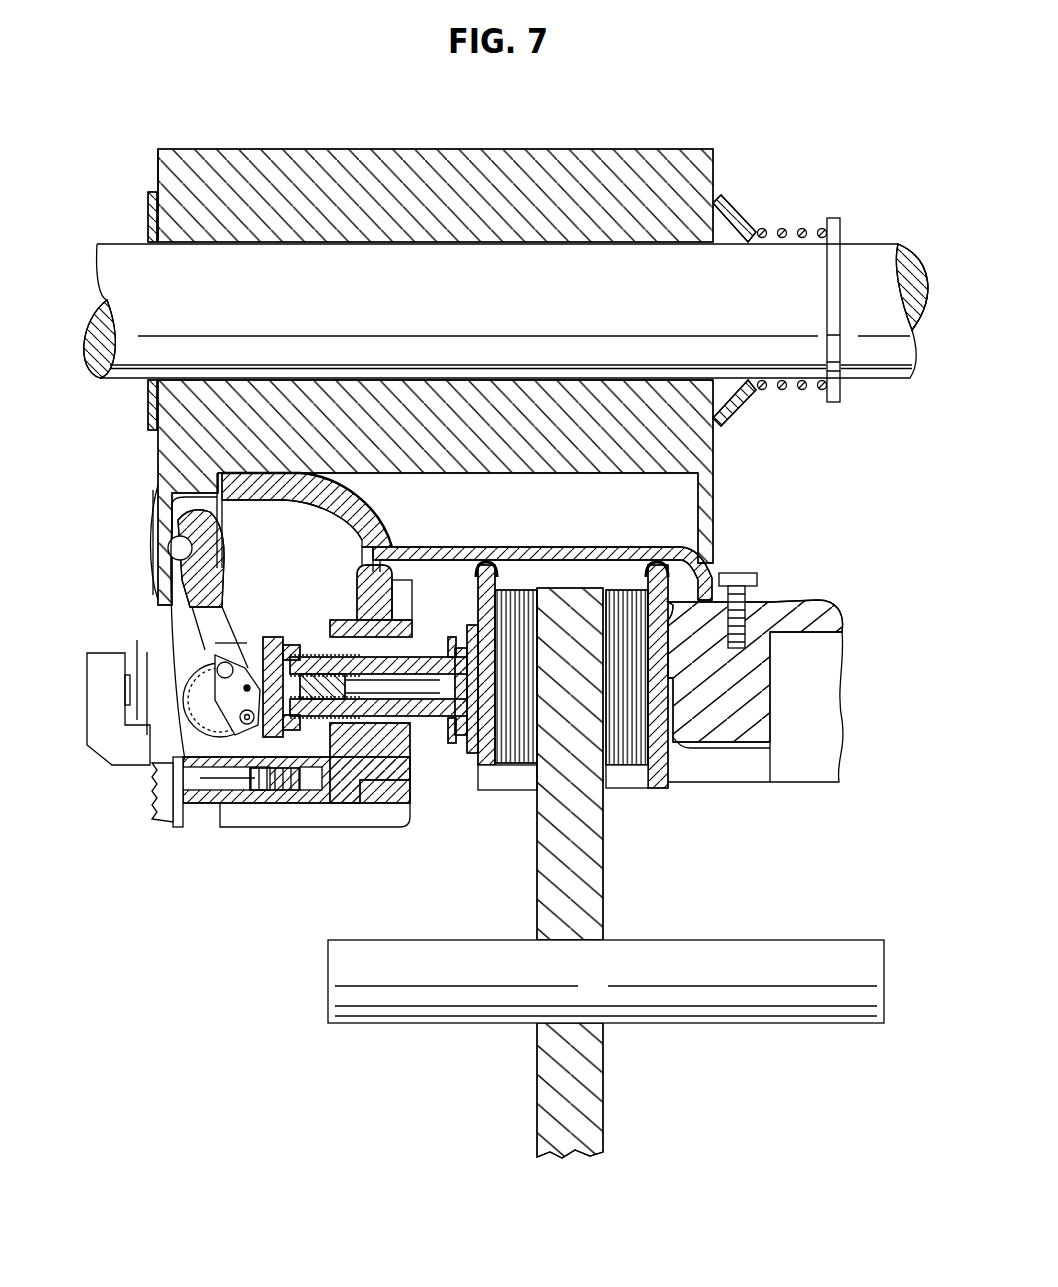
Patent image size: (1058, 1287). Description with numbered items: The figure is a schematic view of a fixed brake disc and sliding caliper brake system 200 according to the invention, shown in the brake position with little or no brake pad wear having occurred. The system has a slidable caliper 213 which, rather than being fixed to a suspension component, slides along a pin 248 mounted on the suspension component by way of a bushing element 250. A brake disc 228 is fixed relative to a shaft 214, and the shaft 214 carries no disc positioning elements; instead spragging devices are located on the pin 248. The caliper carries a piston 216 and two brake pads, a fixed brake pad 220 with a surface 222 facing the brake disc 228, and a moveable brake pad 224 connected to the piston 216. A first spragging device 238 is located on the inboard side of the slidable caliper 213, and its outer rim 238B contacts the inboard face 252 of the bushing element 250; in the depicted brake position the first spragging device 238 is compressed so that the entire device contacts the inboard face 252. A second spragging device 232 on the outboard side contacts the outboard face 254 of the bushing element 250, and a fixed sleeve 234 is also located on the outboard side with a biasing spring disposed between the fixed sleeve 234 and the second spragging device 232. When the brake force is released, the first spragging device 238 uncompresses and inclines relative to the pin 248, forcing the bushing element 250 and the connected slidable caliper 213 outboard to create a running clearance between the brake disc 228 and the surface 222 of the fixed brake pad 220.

The motor assembly 200 is at (756, 114).
The slidable caliper 213 is at (139, 564).
The shaft 214 is at (405, 972).
The piston 216 is at (440, 662).
The fixed brake pad 220 is at (625, 780).
The surface of the fixed brake pad 222 is at (596, 620).
The moveable brake pad 224 is at (522, 612).
The brake disc 228 is at (592, 886).
The second spragging device 232 is at (758, 420).
The fixed sleeve 234 is at (833, 230).
The first spragging device 238 is at (141, 410).
The outer rim 238B is at (147, 210).
The pin 248 is at (881, 254).
The bushing element 250 is at (598, 176).
The inboard face 252 is at (157, 178).
The outboard face 254 is at (737, 212).